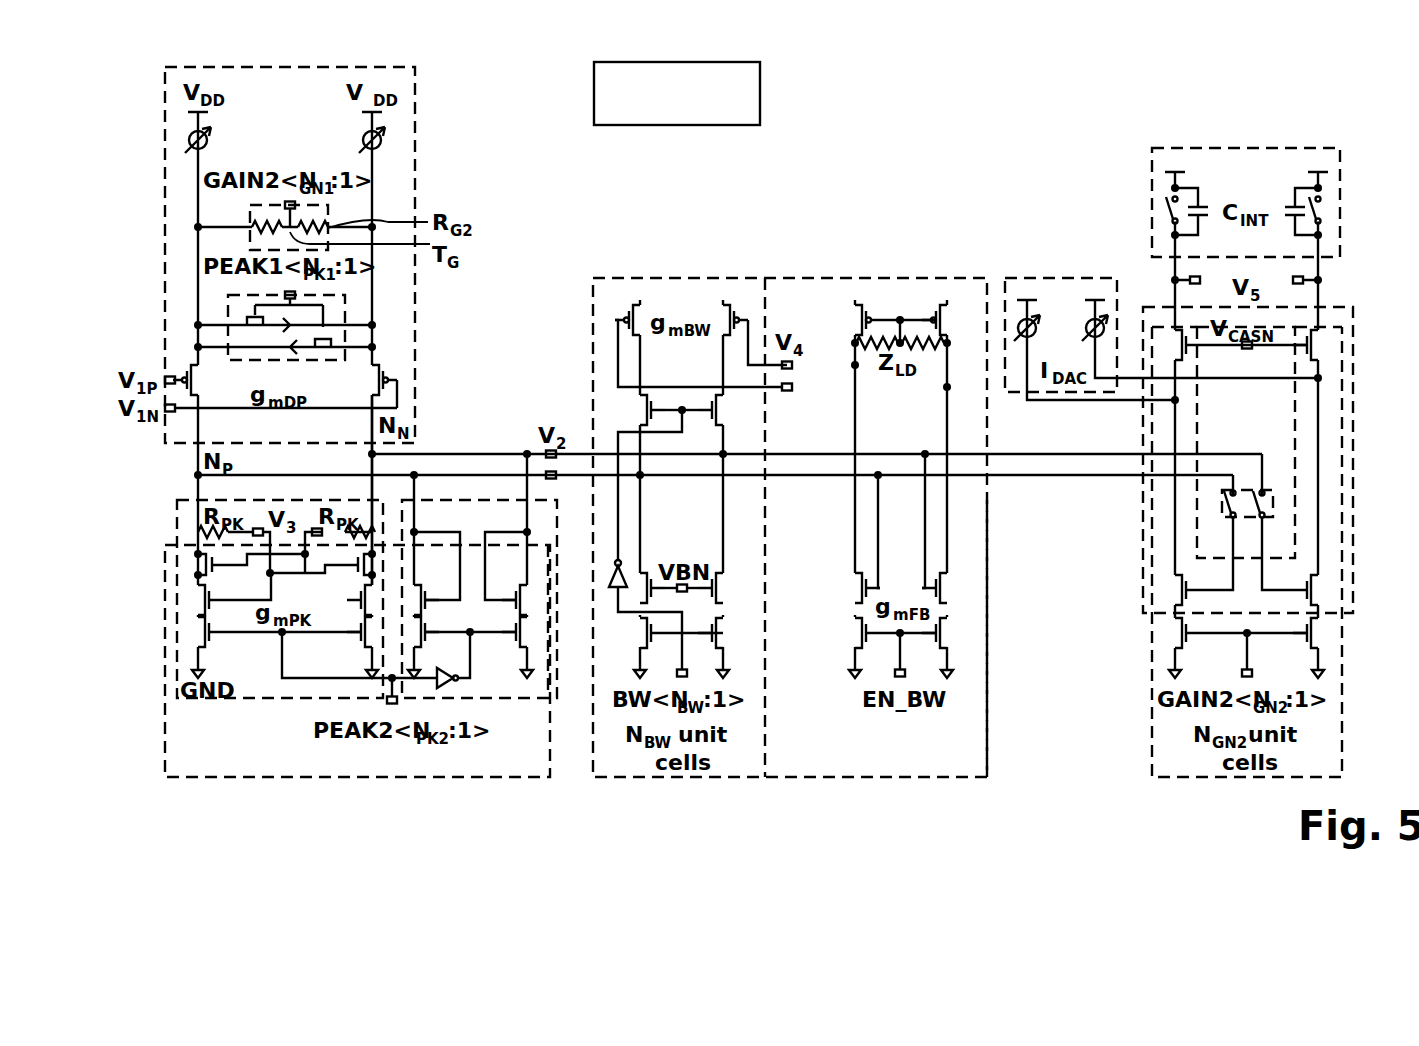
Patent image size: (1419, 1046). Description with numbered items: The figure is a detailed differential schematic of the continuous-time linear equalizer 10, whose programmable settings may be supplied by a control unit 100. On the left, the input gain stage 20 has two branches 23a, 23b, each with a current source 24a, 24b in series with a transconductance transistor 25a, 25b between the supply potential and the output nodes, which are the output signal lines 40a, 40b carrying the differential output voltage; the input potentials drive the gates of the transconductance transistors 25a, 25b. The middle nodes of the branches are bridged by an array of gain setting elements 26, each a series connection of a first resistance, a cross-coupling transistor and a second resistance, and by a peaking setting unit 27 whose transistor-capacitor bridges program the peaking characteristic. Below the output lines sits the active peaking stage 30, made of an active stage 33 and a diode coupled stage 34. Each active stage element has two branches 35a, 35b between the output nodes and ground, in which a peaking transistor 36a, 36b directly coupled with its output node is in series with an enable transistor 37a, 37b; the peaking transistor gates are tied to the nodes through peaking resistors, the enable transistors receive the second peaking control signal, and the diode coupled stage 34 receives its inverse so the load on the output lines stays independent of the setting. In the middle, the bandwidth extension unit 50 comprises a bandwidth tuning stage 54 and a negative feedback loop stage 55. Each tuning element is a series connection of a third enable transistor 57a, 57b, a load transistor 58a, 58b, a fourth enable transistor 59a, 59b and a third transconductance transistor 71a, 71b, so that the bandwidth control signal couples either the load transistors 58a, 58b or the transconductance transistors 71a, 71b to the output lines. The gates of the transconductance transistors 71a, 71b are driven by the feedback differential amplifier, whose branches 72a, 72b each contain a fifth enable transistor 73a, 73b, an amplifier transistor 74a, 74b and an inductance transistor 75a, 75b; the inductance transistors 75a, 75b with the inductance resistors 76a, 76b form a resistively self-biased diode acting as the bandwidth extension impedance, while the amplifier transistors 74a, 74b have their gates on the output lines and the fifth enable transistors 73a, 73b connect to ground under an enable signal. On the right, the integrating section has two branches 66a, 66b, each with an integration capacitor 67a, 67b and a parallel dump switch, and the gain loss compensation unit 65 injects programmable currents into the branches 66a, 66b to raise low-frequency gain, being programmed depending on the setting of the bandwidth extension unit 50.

The amplifier circuit 10 is at (940, 112).
The control unit 100 is at (760, 95).
The input gain stage 20 is at (415, 100).
The first branch 23a is at (198, 292).
The second branch 23b is at (372, 285).
The current source 24a is at (188, 142).
The current source 24b is at (382, 145).
The transconductance transistor 25a is at (192, 370).
The transconductance transistor 25b is at (380, 372).
The gain setting elements 26 is at (328, 218).
The peaking setting unit 27 is at (345, 312).
The active peaking stage 30 is at (452, 777).
The active stage 33 is at (276, 698).
The diode coupled stage 34 is at (531, 698).
The branch 35a is at (200, 530).
The branch 35b is at (372, 528).
The peaking transistor 36a is at (205, 600).
The peaking transistor 36b is at (358, 600).
The enable transistor 37a is at (205, 632).
The enable transistor 37b is at (360, 640).
The output signal line 40a is at (280, 475).
The output signal line 40b is at (475, 454).
The bandwidth extension unit 50 is at (765, 278).
The bandwidth tuning stage 54 is at (755, 668).
The negative feedback loop stage 55 is at (980, 608).
The third enable transistor 57a is at (632, 633).
The third enable transistor 57b is at (718, 633).
The load transistor 58a is at (632, 588).
The load transistor 58b is at (718, 585).
The fourth enable transistor 59a is at (629, 410).
The fourth enable transistor 59b is at (712, 412).
The gain loss compensation unit 65 is at (1052, 278).
The branch 66a is at (1175, 298).
The branch 66b is at (1318, 295).
The integration capacitor 67a is at (1198, 205).
The integration capacitor 67b is at (1295, 205).
The third transconductance transistor 71a is at (640, 302).
The third transconductance transistor 71b is at (723, 302).
The branch 72a is at (855, 440).
The branch 72b is at (960, 445).
The fifth enable transistor 73a is at (865, 630).
The fifth enable transistor 73b is at (955, 635).
The amplifier transistor 74a is at (865, 582).
The amplifier transistor 74b is at (955, 585).
The inductance transistor 75a is at (855, 302).
The inductance transistor 75b is at (947, 302).
The inductance resistor 76a is at (855, 343).
The inductance resistor 76b is at (947, 343).